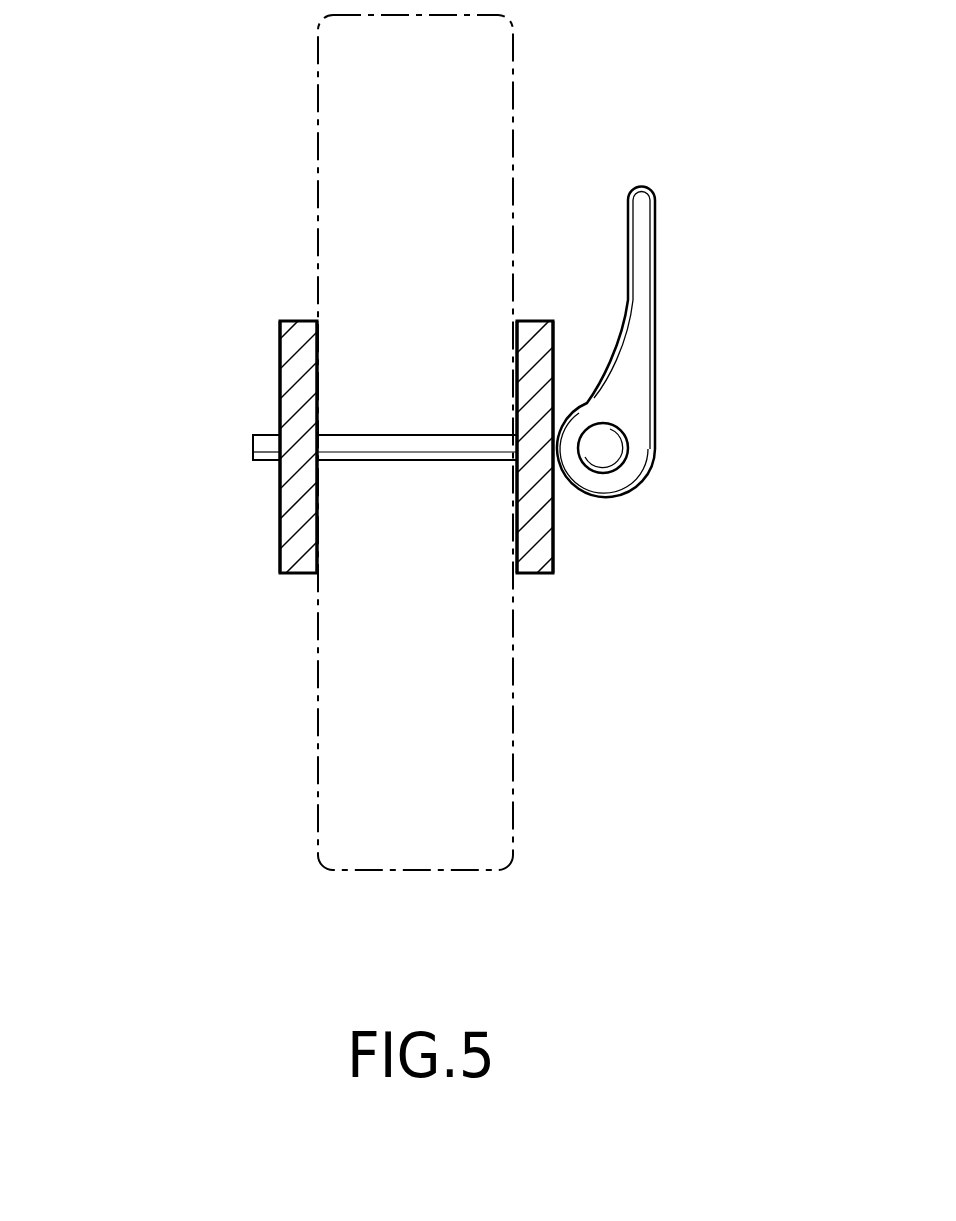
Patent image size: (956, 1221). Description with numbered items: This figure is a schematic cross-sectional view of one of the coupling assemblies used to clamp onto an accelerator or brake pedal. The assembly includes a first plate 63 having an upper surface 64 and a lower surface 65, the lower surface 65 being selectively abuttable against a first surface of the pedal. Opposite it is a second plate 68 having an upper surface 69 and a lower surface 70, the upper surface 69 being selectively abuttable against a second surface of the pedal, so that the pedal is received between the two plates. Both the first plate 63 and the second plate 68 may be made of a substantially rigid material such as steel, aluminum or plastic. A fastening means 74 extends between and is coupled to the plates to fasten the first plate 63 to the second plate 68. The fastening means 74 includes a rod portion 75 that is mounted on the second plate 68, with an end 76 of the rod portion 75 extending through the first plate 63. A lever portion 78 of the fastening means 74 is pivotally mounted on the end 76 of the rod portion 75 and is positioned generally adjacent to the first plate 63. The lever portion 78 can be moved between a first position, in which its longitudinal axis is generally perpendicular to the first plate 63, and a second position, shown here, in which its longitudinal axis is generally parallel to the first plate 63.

The first plate 63 is at (543, 326).
The upper surface 64 is at (557, 565).
The lower surface 65 is at (518, 563).
The second plate 68 is at (302, 380).
The upper surface 69 is at (316, 546).
The lower surface 70 is at (295, 556).
The fastening means 74 is at (638, 450).
The rod portion 75 is at (415, 440).
The end of the rod portion 76 is at (563, 482).
The lever portion 78 is at (640, 365).